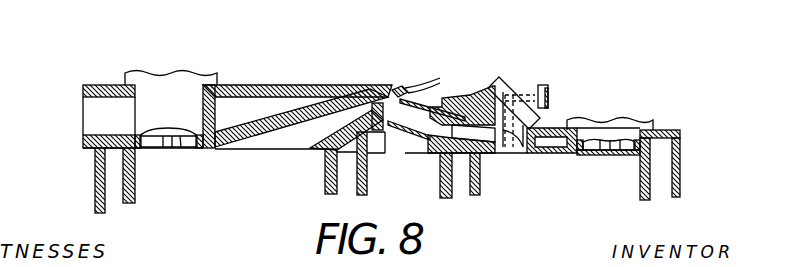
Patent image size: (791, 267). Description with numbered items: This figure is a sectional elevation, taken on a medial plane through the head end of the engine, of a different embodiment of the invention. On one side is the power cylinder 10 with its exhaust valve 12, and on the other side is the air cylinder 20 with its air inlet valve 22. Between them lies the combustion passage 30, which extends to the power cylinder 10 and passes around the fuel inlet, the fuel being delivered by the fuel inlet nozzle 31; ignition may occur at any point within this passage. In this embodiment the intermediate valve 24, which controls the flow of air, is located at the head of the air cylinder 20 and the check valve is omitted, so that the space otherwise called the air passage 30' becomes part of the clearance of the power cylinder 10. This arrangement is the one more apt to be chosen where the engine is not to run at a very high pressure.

The power cylinder 10 is at (137, 181).
The exhaust valve 12 is at (188, 132).
The air cylinder 20 is at (640, 186).
The air inlet valve 22 is at (617, 152).
The intermediate valve 24 is at (506, 150).
The combustion passage 30 is at (301, 119).
The air passage 30' is at (455, 106).
The fuel inlet nozzle 31 is at (398, 88).